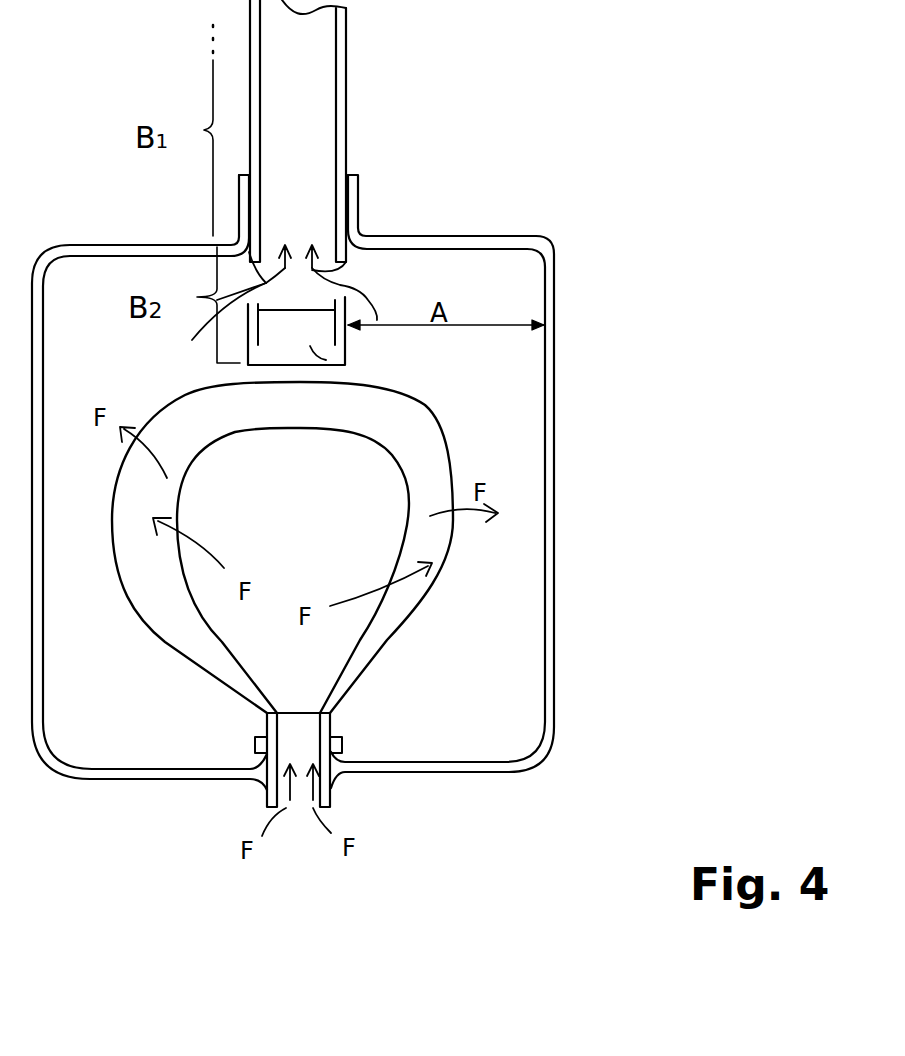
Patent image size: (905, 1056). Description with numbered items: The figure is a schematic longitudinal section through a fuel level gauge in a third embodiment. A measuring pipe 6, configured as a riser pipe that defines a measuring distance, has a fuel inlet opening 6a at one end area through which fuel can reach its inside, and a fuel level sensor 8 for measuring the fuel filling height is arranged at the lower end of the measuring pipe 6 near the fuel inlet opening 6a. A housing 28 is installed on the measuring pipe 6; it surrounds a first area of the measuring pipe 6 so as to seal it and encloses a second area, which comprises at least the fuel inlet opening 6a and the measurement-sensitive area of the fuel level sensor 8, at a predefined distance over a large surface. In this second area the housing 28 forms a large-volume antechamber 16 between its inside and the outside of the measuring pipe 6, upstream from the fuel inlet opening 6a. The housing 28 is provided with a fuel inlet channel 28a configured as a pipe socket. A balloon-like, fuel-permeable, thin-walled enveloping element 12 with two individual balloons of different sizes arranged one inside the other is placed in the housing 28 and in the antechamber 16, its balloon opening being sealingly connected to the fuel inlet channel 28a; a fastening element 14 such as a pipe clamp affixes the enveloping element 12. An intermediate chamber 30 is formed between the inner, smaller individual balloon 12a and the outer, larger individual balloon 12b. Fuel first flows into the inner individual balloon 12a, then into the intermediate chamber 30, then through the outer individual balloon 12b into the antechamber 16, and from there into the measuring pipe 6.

The measuring pipe 6 is at (346, 55).
The fuel inlet opening 6a is at (238, 248).
The fuel level sensor 8 is at (345, 365).
The enveloping element 12 is at (437, 547).
The inner individual balloon 12a is at (387, 594).
The outer individual balloon 12b is at (453, 545).
The fastening element 14 is at (254, 745).
The antechamber 16 is at (84, 673).
The housing 28 is at (554, 445).
The fuel inlet channel 28a is at (336, 718).
The intermediate chamber 30 is at (285, 498).